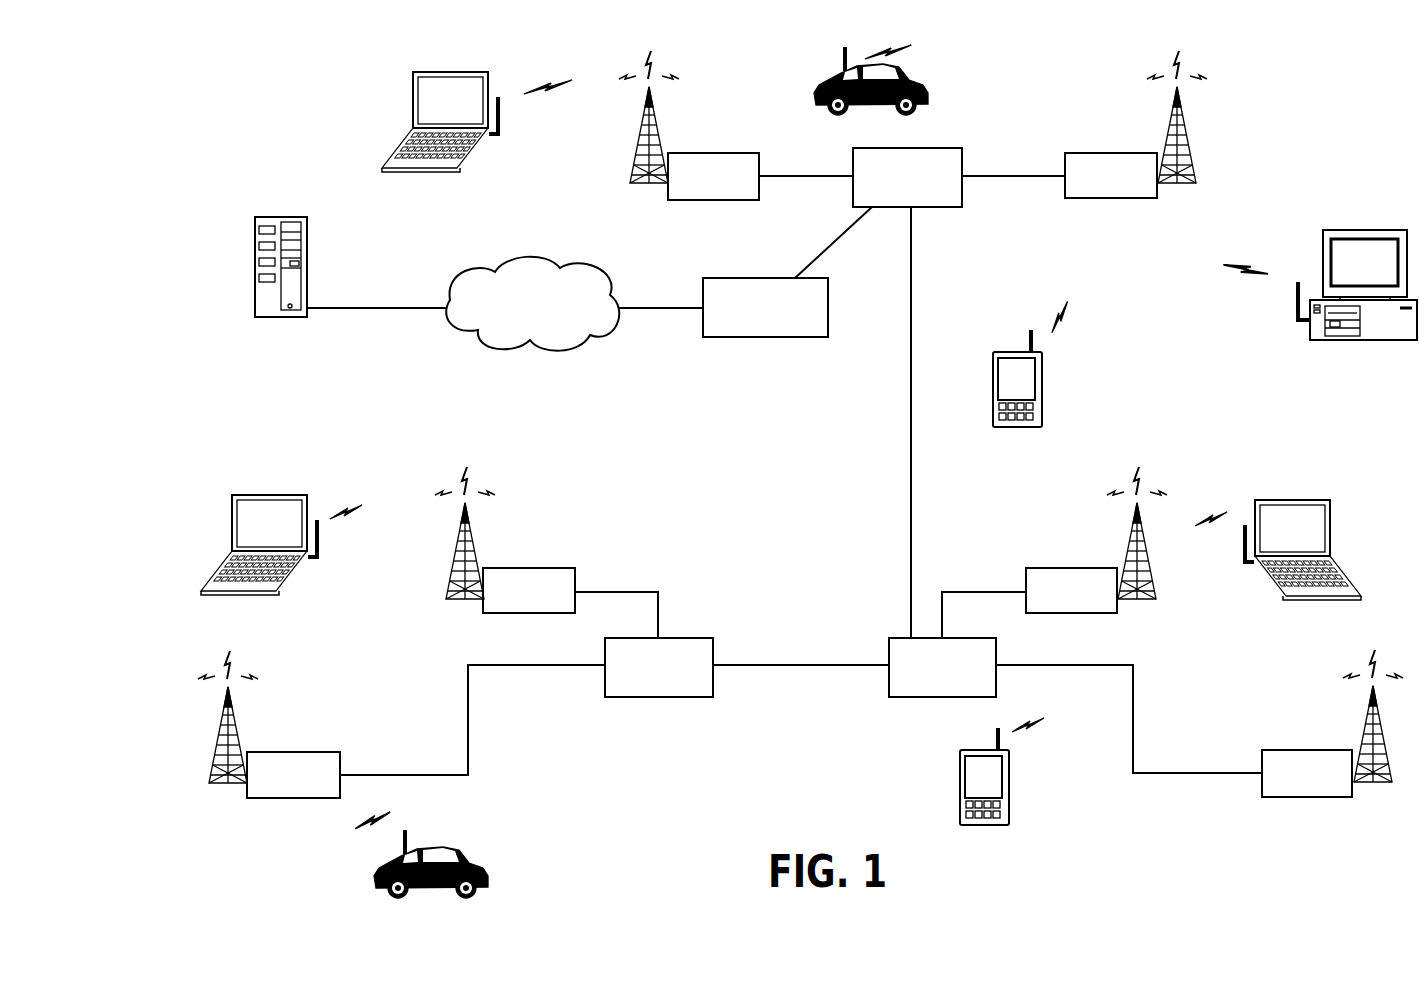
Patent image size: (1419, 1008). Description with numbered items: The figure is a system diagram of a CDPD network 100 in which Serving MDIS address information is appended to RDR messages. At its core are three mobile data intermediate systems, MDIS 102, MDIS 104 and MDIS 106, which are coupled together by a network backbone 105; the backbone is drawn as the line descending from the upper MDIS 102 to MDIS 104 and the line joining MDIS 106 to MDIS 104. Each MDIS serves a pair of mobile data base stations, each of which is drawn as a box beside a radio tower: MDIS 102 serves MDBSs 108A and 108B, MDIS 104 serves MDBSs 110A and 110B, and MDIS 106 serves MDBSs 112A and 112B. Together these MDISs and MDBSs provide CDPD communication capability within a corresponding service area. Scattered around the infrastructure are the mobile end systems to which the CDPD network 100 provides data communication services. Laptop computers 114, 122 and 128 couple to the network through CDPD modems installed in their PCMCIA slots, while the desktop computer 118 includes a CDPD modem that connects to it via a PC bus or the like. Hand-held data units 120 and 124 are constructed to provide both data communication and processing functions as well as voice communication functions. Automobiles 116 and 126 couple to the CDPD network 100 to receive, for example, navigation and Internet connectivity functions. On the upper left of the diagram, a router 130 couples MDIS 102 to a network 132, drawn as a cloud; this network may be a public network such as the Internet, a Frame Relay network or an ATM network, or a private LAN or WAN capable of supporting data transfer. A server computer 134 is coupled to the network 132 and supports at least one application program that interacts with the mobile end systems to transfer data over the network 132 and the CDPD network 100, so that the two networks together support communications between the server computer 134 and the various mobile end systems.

The CDPD network 100 is at (690, 820).
The MDIS 102 is at (946, 148).
The MDIS 104 is at (955, 638).
The network backbone 105 is at (911, 423).
The MDIS 106 is at (693, 638).
The MDBS 108A is at (711, 153).
The MDBS 108B is at (1123, 153).
The MDBS 110A is at (1090, 568).
The MDBS 110B is at (1333, 750).
The MDBS 112A is at (517, 568).
The MDBS 112B is at (280, 752).
The laptop computer 114 is at (437, 71).
The automobile 116 is at (917, 90).
The desktop computer 118 is at (1323, 262).
The hand-held data unit 120 is at (1043, 393).
The laptop computer 122 is at (1308, 500).
The hand-held data unit 124 is at (1010, 792).
The automobile 126 is at (470, 870).
The laptop computer 128 is at (256, 495).
The router 130 is at (713, 278).
The network 132 is at (573, 262).
The server computer 134 is at (300, 217).